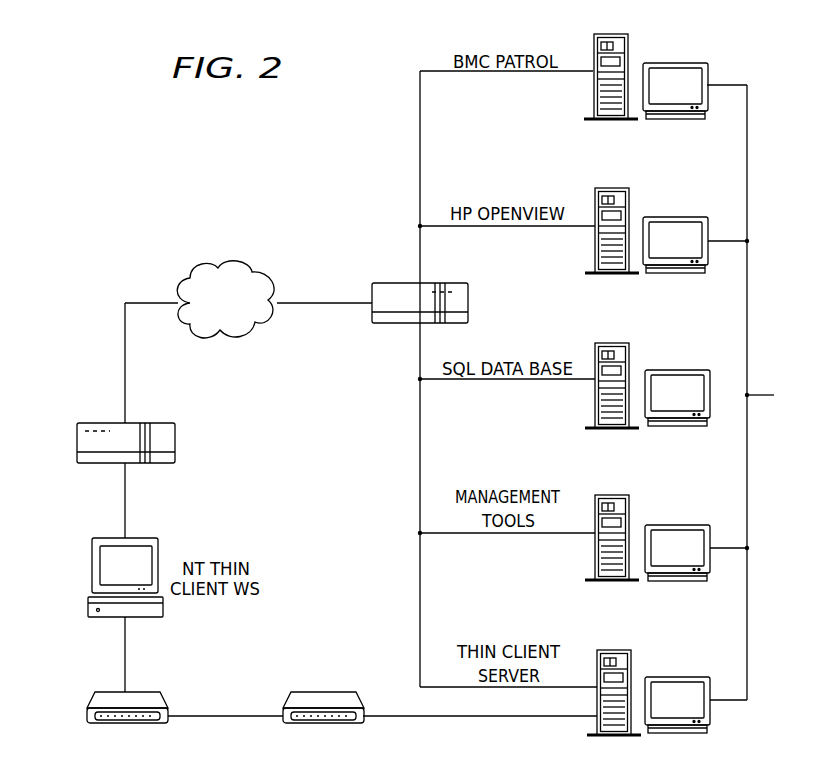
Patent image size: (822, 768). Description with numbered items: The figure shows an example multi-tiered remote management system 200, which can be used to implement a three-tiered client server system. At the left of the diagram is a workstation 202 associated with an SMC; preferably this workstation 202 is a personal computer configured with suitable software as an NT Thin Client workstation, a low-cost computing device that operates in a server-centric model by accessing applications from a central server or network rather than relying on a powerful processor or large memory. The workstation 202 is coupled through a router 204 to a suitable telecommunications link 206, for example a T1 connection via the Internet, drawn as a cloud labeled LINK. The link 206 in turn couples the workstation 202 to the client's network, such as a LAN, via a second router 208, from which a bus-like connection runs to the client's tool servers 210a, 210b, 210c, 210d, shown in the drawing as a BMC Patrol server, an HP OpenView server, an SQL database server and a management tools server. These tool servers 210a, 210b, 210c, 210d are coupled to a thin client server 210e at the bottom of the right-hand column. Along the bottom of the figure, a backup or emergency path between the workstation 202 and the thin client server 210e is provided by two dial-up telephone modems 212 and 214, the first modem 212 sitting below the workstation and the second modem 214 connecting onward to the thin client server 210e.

The multi-tiered remote management system 200 is at (146, 179).
The workstation 202 is at (90, 565).
The router 204 is at (75, 440).
The telecommunications link 206 is at (219, 340).
The second router 208 is at (390, 325).
The tool server 210a is at (678, 62).
The tool server 210b is at (678, 216).
The tool server 210c is at (678, 369).
The tool server 210d is at (678, 524).
The thin client server 210e is at (680, 676).
The dial-up telephone modem 212 is at (86, 716).
The dial-up telephone modem 214 is at (325, 691).